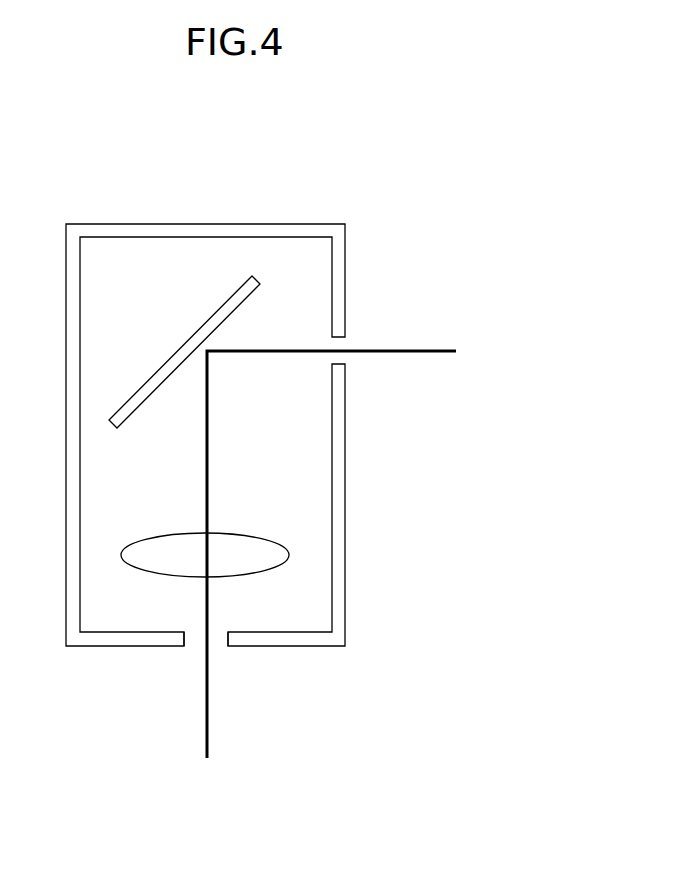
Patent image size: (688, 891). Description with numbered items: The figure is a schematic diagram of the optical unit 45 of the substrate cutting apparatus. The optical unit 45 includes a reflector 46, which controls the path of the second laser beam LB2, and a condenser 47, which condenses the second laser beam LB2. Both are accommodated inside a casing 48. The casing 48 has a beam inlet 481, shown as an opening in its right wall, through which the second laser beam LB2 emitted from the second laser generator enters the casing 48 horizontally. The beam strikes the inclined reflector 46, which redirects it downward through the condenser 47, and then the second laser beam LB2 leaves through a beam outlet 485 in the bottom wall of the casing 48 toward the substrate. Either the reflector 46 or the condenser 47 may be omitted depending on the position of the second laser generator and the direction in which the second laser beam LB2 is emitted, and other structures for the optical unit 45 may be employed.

The optical unit 45 is at (191, 213).
The reflector 46 is at (170, 360).
The condenser 47 is at (290, 554).
The casing 48 is at (345, 246).
The beam inlet 481 is at (338, 364).
The beam outlet 485 is at (184, 640).
The second laser beam LB2 is at (432, 352).